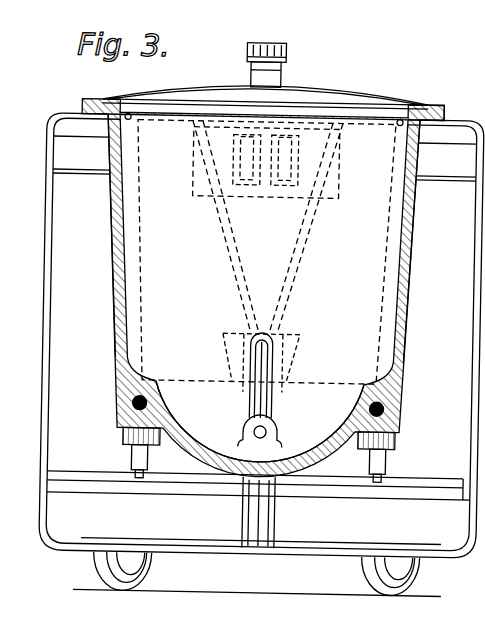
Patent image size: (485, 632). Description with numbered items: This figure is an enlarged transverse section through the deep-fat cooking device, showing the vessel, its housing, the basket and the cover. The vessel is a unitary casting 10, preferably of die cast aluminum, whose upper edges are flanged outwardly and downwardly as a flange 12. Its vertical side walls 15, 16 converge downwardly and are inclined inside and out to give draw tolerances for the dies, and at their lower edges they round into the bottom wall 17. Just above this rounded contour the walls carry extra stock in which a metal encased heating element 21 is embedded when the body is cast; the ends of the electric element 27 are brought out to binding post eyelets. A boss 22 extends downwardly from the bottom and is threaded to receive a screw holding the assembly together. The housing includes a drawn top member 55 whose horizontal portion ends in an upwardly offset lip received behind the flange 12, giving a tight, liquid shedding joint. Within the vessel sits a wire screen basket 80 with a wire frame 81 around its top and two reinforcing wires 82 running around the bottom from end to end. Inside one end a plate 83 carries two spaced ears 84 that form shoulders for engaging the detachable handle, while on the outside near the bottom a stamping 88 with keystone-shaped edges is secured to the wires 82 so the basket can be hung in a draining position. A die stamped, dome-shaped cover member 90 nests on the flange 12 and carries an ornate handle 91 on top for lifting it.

The unitary casting 10 is at (413, 356).
The flange 12 is at (433, 102).
The side wall 15 is at (407, 279).
The side wall 16 is at (113, 294).
The bottom wall 17 is at (297, 470).
The heating element 21 is at (133, 406).
The boss 22 is at (244, 516).
The electric element end 27 is at (106, 473).
The top member 55 is at (49, 131).
The wire screen basket 80 is at (382, 317).
The wire frame 81 is at (125, 122).
The reinforcing wire 82 is at (222, 238).
The plate 83 is at (338, 158).
The ear 84 is at (298, 181).
The stamping 88 is at (223, 334).
The cover member 90 is at (302, 91).
The handle 91 is at (264, 38).